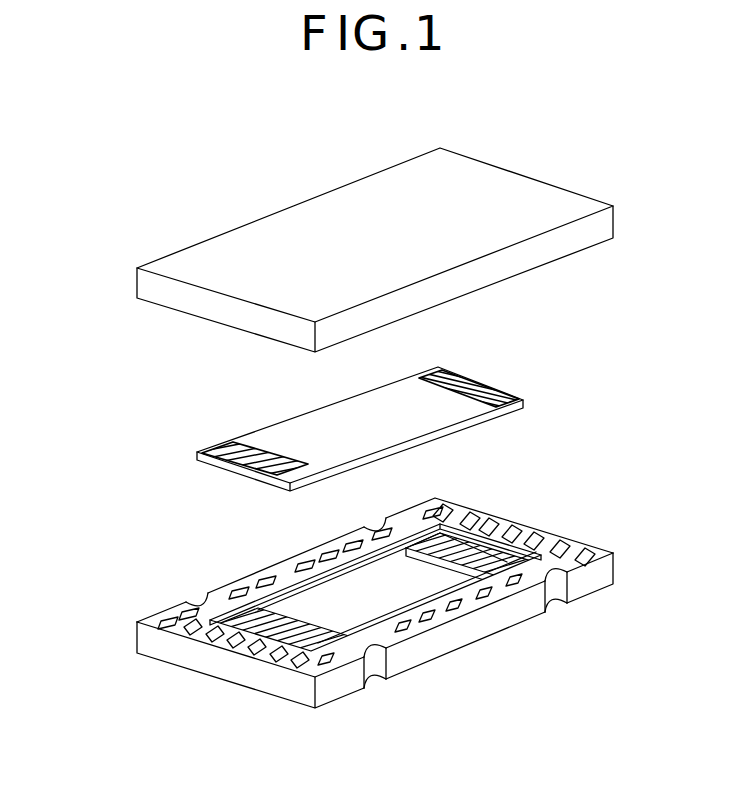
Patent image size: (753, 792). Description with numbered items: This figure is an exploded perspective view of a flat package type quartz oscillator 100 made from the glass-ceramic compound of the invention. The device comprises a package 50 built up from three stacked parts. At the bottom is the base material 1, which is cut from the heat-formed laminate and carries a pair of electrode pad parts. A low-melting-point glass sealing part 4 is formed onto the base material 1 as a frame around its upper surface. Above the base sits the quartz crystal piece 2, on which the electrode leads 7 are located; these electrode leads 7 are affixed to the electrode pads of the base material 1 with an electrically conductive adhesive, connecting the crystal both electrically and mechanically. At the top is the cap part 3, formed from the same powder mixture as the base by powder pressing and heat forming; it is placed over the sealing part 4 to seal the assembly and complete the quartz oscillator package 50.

The flat package type quartz oscillator 100 is at (544, 151).
The package 50 is at (70, 538).
The cap part 3 is at (575, 192).
The quartz crystal piece 2 is at (514, 399).
The electrode leads 7 is at (224, 452).
The base material 1 is at (600, 580).
The low-melting-point glass sealing part 4 is at (543, 548).